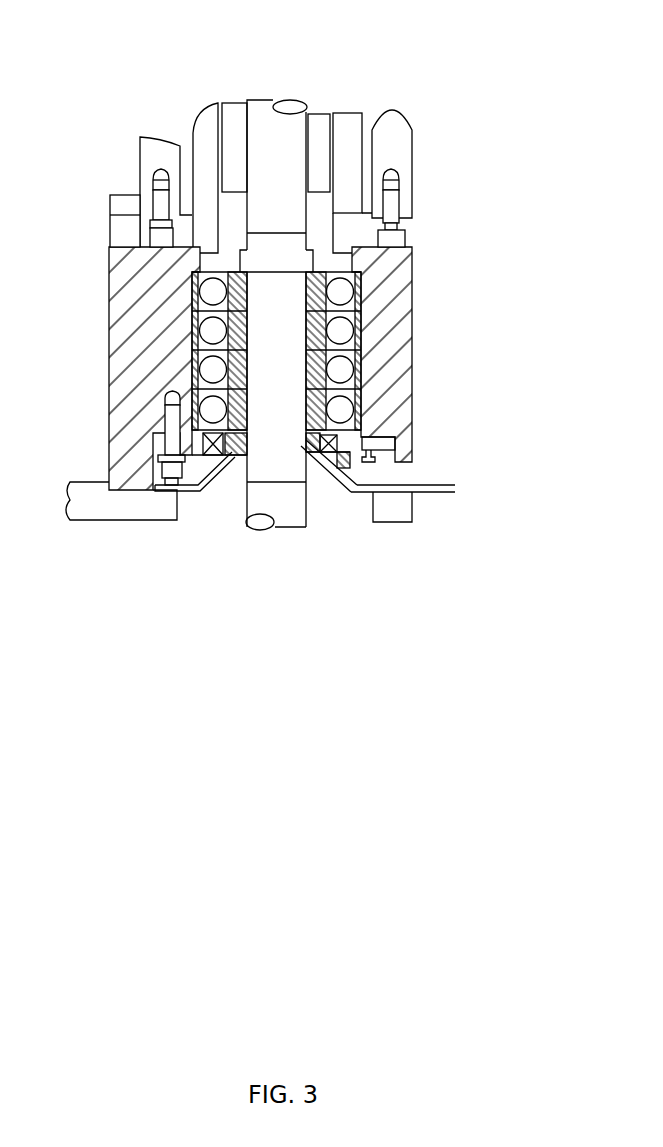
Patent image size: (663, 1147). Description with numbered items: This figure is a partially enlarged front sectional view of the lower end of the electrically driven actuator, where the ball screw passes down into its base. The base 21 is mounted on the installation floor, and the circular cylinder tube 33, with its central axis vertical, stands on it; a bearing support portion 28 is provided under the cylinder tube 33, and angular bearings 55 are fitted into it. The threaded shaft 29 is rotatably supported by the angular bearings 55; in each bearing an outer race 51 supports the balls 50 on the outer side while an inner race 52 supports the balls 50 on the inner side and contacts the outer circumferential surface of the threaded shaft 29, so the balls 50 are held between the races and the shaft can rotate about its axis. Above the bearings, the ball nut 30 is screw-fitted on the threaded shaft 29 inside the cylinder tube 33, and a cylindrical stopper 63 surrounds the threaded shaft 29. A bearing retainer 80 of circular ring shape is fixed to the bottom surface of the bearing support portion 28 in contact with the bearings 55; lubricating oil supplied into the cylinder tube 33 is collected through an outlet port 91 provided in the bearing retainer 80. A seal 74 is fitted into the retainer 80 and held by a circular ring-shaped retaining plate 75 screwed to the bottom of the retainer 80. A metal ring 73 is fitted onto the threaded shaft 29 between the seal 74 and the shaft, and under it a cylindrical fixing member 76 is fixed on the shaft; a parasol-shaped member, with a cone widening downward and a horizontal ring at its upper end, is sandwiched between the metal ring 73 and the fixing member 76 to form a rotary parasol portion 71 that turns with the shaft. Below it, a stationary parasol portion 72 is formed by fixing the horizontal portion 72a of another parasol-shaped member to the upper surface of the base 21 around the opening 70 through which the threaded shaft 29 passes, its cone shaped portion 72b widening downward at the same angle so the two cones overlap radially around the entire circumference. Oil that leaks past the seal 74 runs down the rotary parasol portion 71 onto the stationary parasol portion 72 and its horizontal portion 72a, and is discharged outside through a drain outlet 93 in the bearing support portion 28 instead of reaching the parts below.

The base 21 is at (110, 507).
The bearing support portion 28 is at (378, 417).
The threaded shaft 29 is at (272, 130).
The ball nut 30 is at (318, 130).
The cylinder tube 33 is at (390, 127).
The balls 50 is at (338, 292).
The outer race 51 is at (357, 345).
The inner race 52 is at (317, 377).
The angular bearings 55 is at (375, 351).
The cylindrical stopper 63 is at (343, 127).
The opening 70 is at (368, 505).
The rotary parasol portion 71 is at (332, 468).
The stationary parasol portion 72 is at (393, 514).
The horizontal portion 72a is at (362, 495).
The cone shaped portion 72b is at (337, 497).
The metal ring 73 is at (253, 487).
The seal 74 is at (282, 482).
The retaining plate 75 is at (210, 483).
The fixing member 76 is at (235, 460).
The bearing retainer 80 is at (387, 453).
The outlet port 91 is at (368, 463).
The drain outlet 93 is at (378, 461).